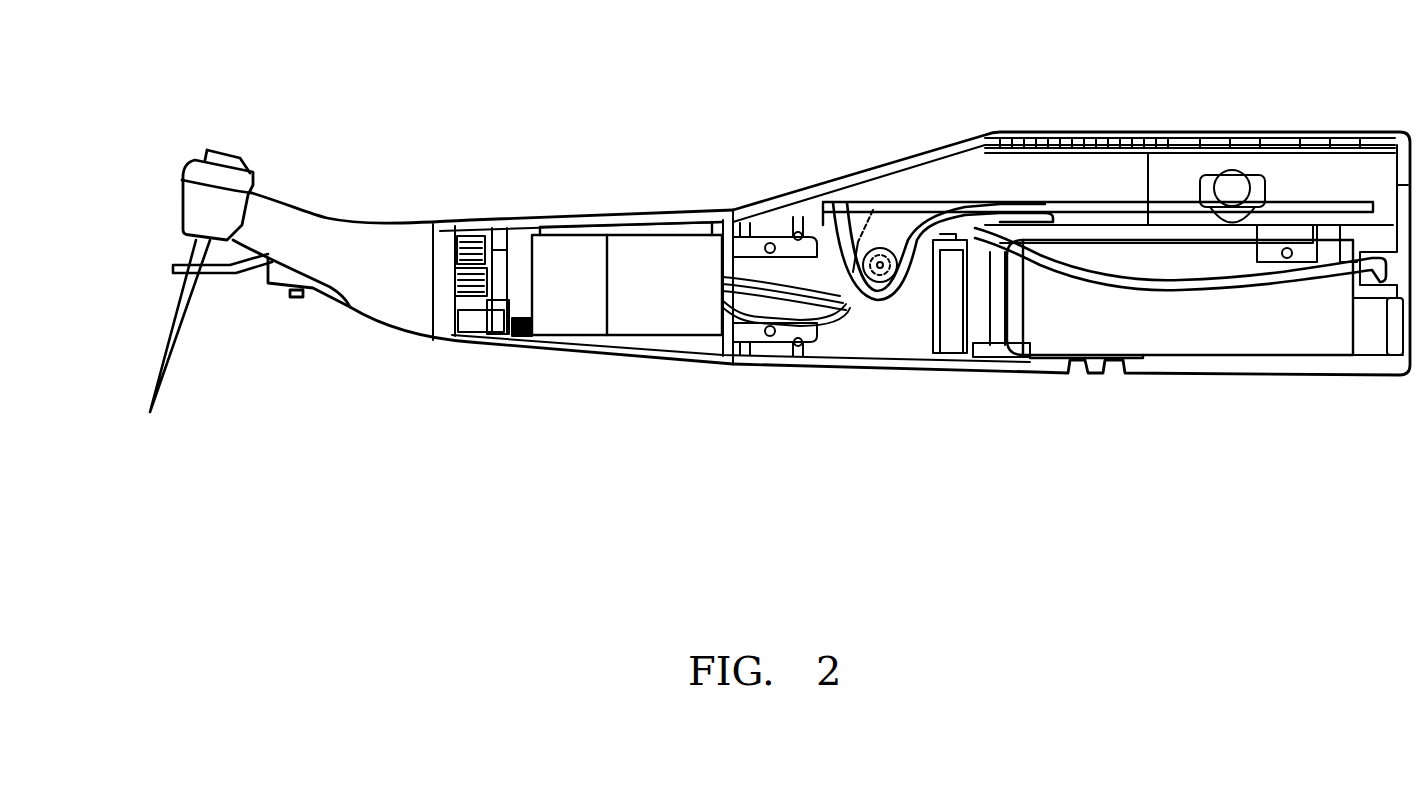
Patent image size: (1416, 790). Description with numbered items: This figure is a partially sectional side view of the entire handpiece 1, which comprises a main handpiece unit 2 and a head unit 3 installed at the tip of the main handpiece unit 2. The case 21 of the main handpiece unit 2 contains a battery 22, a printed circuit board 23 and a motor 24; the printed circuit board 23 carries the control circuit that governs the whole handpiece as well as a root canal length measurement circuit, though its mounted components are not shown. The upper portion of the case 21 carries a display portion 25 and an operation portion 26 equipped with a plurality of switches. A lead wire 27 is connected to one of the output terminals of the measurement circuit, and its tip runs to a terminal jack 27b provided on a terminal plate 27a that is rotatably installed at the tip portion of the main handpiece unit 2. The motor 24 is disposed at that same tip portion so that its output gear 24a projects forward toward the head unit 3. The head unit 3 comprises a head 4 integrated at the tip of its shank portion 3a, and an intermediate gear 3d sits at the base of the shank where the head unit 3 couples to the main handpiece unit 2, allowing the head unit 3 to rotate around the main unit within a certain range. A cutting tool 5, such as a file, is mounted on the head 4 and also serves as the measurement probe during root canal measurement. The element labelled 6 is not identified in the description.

The handpiece 1 is at (692, 405).
The main handpiece unit 2 is at (1065, 380).
The head unit 3 is at (328, 206).
The shank portion 3a is at (363, 257).
The intermediate gear 3d is at (465, 245).
The head 4 is at (178, 195).
The cutting tool 5 is at (152, 415).
The bar 6 is at (215, 275).
The case 21 is at (1340, 365).
The battery 22 is at (1178, 330).
The printed circuit board 23 is at (927, 200).
The motor 24 is at (643, 250).
The output gear 24a is at (460, 290).
The display portion 25 is at (1035, 128).
The operation portion 26 is at (1255, 148).
The lead wire 27 is at (847, 317).
The terminal plate 27a is at (520, 334).
The terminal jack 27b is at (485, 322).